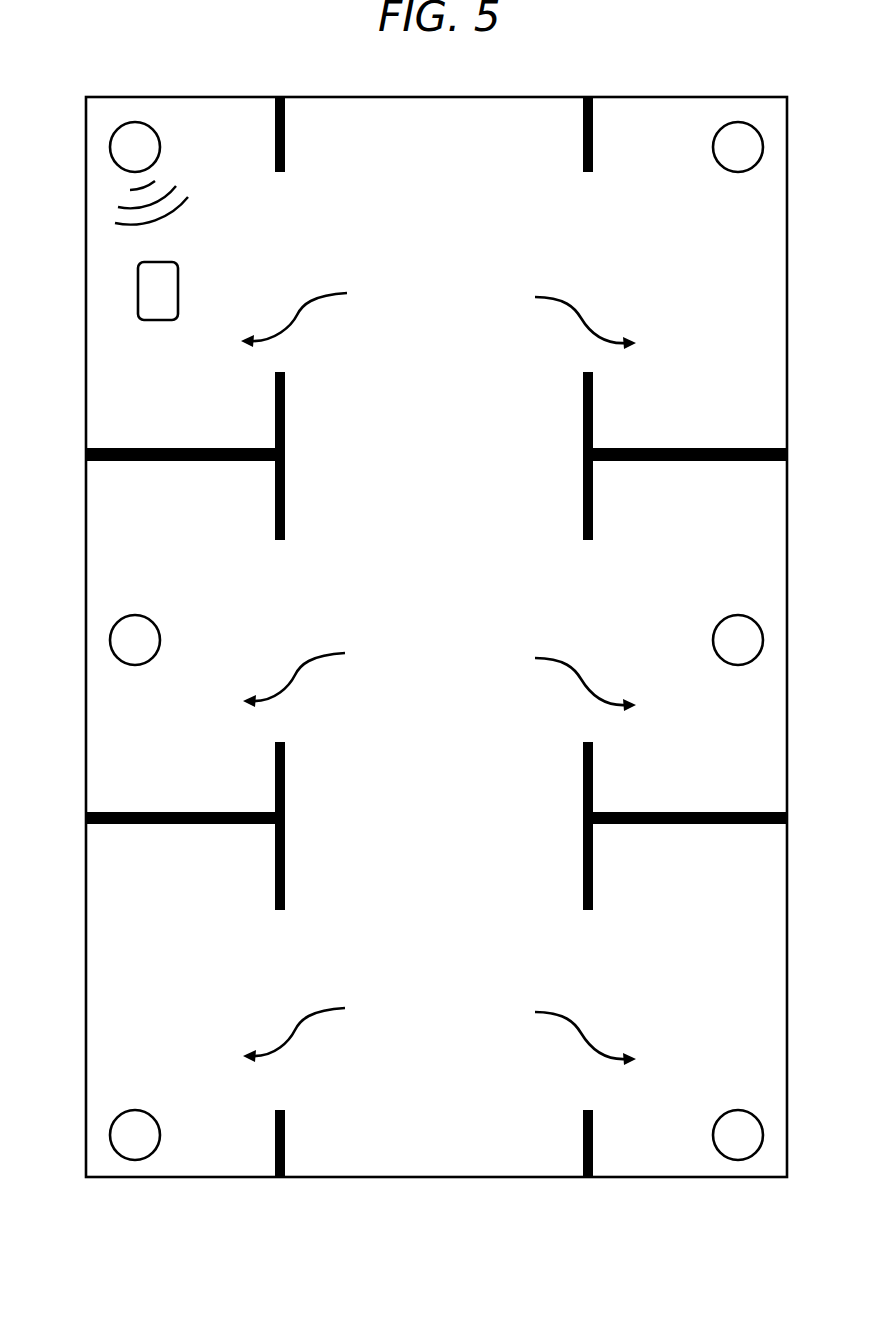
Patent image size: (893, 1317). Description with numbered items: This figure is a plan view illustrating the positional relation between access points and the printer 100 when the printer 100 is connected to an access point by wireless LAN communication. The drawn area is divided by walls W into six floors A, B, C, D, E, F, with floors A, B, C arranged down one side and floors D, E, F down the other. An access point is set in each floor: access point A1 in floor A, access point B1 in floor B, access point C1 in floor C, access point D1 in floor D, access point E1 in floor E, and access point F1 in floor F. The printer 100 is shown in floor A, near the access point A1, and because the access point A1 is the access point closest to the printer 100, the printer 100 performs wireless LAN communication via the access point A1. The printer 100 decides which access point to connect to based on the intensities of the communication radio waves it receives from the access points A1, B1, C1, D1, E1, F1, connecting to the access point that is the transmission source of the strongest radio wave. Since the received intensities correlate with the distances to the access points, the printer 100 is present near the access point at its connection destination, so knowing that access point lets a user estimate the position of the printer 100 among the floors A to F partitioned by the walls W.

The printer 100 is at (178, 302).
The walls W is at (286, 163).
The access point A1 is at (114, 158).
The access point B1 is at (114, 651).
The access point C1 is at (114, 1146).
The access point D1 is at (717, 158).
The access point E1 is at (717, 651).
The access point F1 is at (717, 1146).
The floor A is at (310, 317).
The floor B is at (306, 675).
The floor C is at (311, 1030).
The floor D is at (574, 319).
The floor E is at (568, 679).
The floor F is at (574, 1033).